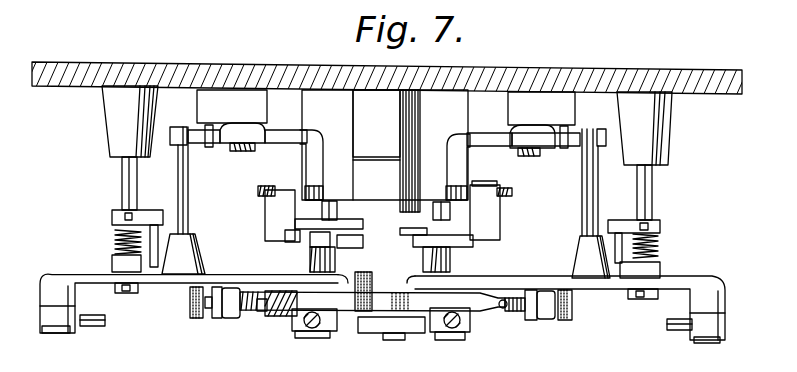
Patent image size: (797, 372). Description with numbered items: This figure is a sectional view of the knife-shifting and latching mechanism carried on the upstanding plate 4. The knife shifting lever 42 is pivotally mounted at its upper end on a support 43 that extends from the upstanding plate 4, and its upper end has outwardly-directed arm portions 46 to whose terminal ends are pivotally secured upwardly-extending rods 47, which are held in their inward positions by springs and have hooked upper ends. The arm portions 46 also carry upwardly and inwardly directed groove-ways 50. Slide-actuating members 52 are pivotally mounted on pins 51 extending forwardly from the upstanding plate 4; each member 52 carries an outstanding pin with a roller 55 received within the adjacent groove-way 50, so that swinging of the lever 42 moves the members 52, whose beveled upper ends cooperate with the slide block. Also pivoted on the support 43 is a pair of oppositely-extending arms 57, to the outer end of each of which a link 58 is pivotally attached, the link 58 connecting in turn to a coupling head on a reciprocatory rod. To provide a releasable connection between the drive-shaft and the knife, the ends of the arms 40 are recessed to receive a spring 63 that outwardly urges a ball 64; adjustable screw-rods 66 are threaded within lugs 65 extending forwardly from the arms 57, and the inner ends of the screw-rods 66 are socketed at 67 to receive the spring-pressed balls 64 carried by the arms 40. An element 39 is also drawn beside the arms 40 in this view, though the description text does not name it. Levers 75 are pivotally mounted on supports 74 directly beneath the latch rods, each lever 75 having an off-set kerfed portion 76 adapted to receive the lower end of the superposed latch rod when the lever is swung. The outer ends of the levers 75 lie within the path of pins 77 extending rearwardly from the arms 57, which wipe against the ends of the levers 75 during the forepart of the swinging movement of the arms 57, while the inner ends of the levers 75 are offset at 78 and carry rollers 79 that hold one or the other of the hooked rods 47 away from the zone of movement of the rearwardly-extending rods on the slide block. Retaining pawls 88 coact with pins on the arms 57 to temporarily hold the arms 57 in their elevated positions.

The upstanding plate 4 is at (534, 69).
The pivot pin 39 is at (316, 328).
The arms 40 is at (497, 335).
The knife shifting lever 42 is at (478, 230).
The support 43 is at (385, 151).
The arm portions 46 is at (350, 225).
The rods 47 is at (258, 190).
The groove-ways 50 is at (352, 242).
The pins 51 is at (338, 210).
The slide-actuating members 52 is at (310, 260).
The roller 55 is at (300, 237).
The arms 57 is at (165, 284).
The link 58 is at (104, 318).
The spring 63 is at (300, 330).
The ball 64 is at (280, 312).
The lugs 65 is at (224, 319).
The adjustable screw-rods 66 is at (196, 318).
The socket 67 is at (259, 310).
The supports 74 is at (386, 107).
The levers 75 is at (278, 144).
The off-set kerfed portion 76 is at (201, 144).
The pins 77 is at (190, 207).
The offset 78 is at (323, 146).
The rollers 79 is at (325, 188).
The retaining pawls 88 is at (672, 241).